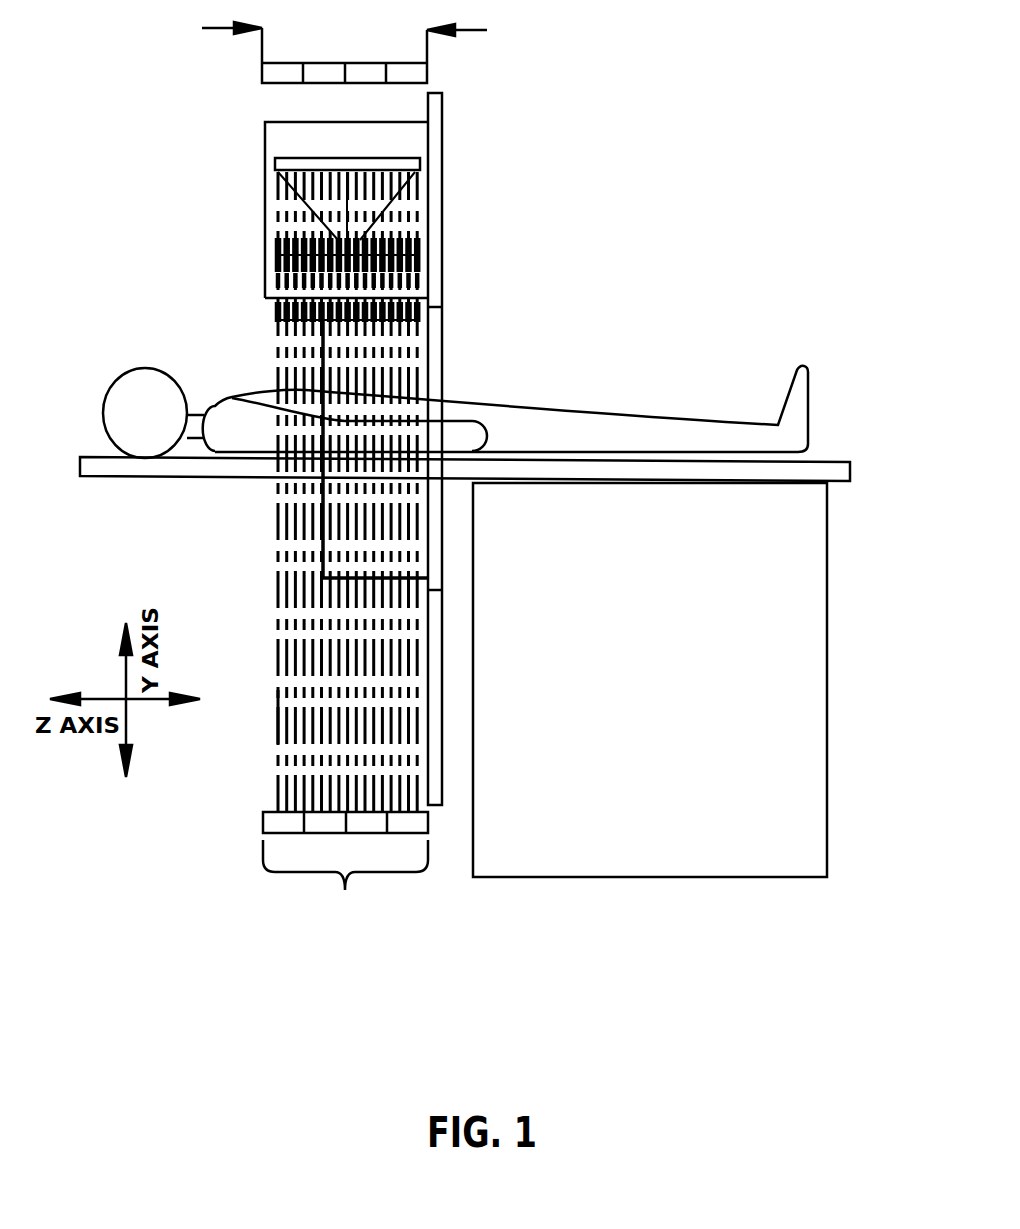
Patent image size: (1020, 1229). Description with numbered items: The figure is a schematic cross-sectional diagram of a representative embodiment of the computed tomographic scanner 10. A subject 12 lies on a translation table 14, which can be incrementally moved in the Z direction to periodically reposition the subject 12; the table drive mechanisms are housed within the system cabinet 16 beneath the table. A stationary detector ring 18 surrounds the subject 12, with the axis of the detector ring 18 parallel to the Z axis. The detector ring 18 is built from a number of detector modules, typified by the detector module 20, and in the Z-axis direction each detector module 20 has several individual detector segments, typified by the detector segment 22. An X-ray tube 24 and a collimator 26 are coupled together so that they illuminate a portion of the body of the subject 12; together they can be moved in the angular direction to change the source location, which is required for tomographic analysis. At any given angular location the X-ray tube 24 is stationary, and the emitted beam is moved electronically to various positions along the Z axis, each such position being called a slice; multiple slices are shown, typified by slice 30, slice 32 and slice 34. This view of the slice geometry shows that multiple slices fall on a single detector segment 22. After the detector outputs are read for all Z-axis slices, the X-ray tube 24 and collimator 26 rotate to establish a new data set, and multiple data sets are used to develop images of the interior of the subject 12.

The computed tomographic scanner 10 is at (552, 256).
The subject 12 is at (802, 363).
The translation table 14 is at (817, 470).
The system cabinet 16 is at (720, 568).
The stationary detector ring 18 is at (235, 76).
The detector module 20 is at (345, 882).
The detector segment 22 is at (275, 818).
The X-ray tube 24 is at (263, 170).
The collimator 26 is at (272, 252).
The slice 30 is at (280, 735).
The slice 32 is at (287, 715).
The slice 34 is at (418, 724).